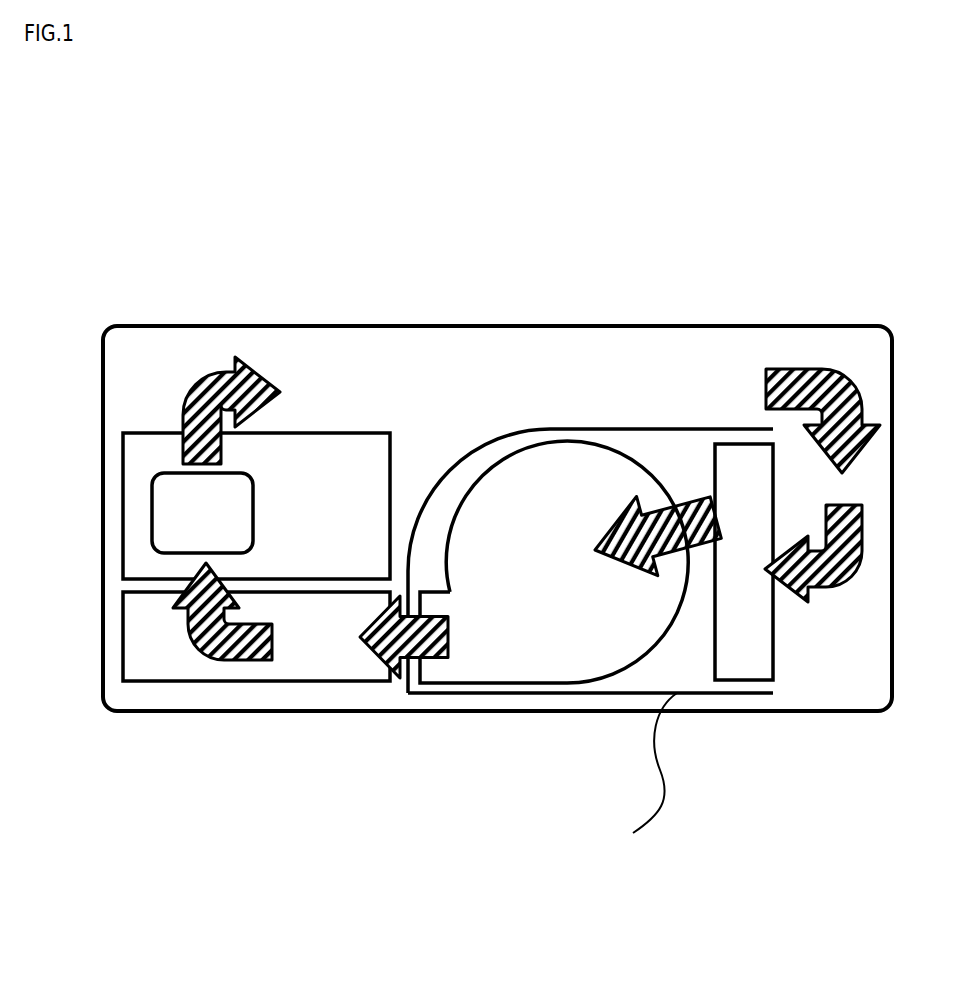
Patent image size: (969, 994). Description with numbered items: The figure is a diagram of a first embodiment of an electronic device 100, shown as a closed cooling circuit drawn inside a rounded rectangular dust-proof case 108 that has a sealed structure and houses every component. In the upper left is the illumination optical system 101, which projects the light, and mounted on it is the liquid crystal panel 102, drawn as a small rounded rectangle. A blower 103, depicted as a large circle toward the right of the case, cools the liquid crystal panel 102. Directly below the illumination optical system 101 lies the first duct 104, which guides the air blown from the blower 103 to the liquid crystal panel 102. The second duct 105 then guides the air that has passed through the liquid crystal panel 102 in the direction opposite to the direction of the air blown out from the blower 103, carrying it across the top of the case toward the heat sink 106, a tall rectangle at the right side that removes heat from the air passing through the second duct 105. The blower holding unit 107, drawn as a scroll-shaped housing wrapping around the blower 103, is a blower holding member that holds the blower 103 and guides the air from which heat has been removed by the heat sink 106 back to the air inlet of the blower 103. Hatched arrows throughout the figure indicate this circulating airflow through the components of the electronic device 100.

The electronic device 100 is at (788, 158).
The illumination optical system 101 is at (298, 446).
The liquid crystal panel 102 is at (168, 485).
The blower 103 is at (580, 665).
The first duct 104 is at (175, 665).
The second duct 105 is at (472, 375).
The heat sink 106 is at (743, 673).
The blower holding unit 107 is at (672, 430).
The dust-proof case 108 is at (380, 708).